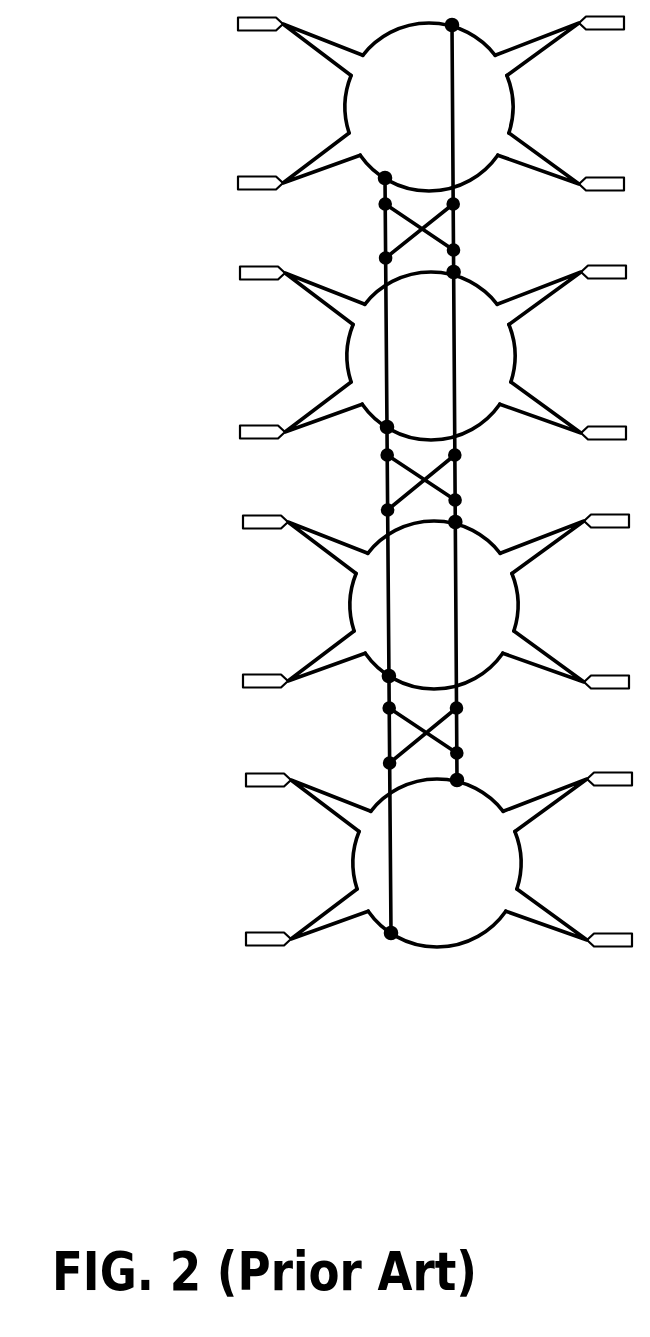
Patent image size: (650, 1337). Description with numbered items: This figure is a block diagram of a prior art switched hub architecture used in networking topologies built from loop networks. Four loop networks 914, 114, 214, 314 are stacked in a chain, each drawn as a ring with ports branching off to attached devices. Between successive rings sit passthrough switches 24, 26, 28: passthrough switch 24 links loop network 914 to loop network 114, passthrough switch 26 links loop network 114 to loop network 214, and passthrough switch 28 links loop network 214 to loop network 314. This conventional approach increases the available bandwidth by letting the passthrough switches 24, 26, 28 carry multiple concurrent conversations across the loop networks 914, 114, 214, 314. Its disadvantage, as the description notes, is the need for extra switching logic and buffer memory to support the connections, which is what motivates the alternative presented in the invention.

The loop network 914 is at (345, 107).
The loop network 114 is at (347, 356).
The loop network 214 is at (350, 605).
The loop network 314 is at (353, 863).
The passthrough switch 24 is at (351, 232).
The passthrough switch 26 is at (346, 472).
The passthrough switch 28 is at (346, 730).